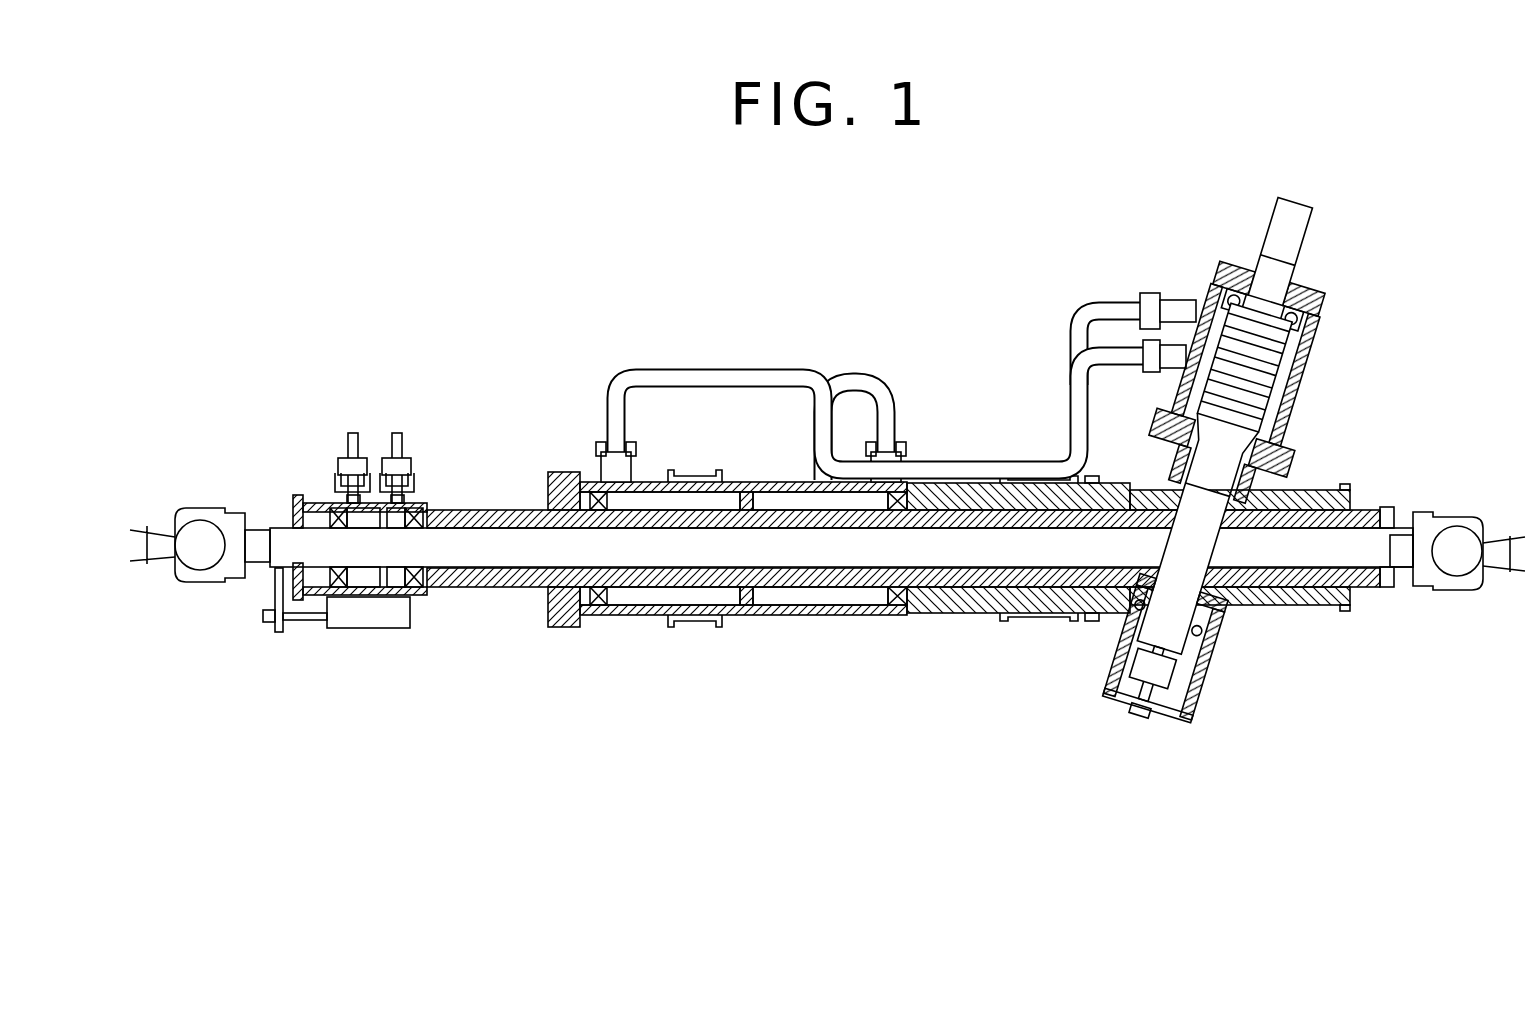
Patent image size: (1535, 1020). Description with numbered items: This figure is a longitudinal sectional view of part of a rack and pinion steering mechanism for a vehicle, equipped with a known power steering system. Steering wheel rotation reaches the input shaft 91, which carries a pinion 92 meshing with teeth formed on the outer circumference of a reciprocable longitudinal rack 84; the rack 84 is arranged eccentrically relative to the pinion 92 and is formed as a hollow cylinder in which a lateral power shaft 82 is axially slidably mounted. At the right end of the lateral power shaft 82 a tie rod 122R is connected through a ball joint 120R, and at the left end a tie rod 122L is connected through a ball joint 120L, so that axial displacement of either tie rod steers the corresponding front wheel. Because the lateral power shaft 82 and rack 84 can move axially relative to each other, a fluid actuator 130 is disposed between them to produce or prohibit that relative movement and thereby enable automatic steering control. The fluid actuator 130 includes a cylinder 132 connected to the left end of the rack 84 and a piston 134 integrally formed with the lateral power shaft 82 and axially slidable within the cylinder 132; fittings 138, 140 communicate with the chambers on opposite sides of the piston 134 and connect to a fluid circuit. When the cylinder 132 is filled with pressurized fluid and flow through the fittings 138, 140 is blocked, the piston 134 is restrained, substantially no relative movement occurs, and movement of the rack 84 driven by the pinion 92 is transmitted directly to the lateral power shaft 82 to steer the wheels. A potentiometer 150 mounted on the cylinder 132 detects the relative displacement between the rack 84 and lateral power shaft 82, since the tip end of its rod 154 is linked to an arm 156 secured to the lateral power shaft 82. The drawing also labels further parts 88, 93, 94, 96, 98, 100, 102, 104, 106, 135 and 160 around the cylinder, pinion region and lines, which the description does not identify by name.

The lateral power shaft 82 is at (518, 556).
The rack 84 is at (1345, 606).
The cylinder housing 88 is at (598, 616).
The input shaft 91 is at (1305, 265).
The pinion 92 is at (1212, 598).
The pinion gear 93 is at (1300, 400).
The pinion housing 94 is at (1318, 382).
The fitting 96 is at (1140, 300).
The hydraulic line 98 is at (1077, 322).
The hydraulic line 100 is at (632, 452).
The hydraulic line 102 is at (898, 452).
The cylinder chamber 104 is at (836, 602).
The piston 106 is at (746, 612).
The ball joint 120L is at (208, 519).
The ball joint 120R is at (1462, 593).
The tie rod 122L is at (162, 523).
The tie rod 122R is at (1512, 534).
The fluid actuator 130 is at (335, 500).
The cylinder 132 is at (422, 590).
The piston 134 is at (372, 594).
The bearing 135 is at (426, 508).
The fitting 138 is at (348, 432).
The fitting 140 is at (403, 446).
The potentiometer 150 is at (342, 630).
The rod 154 is at (300, 622).
The arm 156 is at (272, 592).
The yoke block 160 is at (1188, 672).